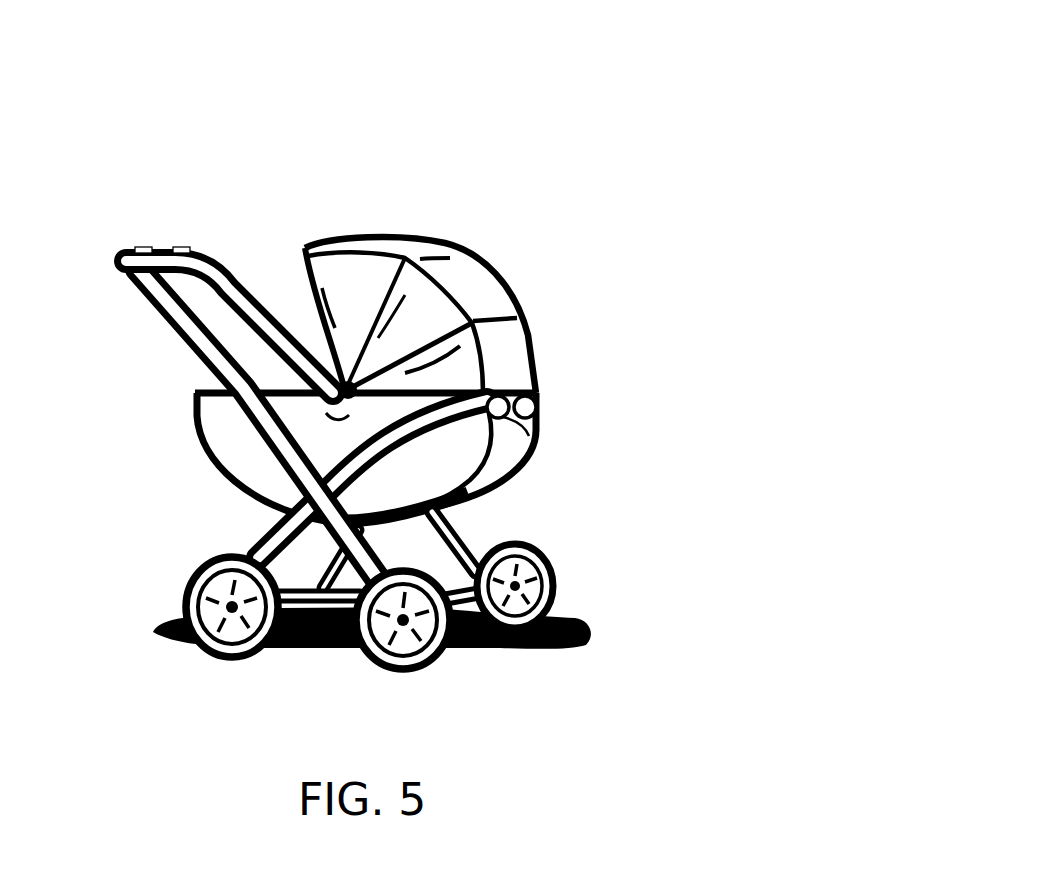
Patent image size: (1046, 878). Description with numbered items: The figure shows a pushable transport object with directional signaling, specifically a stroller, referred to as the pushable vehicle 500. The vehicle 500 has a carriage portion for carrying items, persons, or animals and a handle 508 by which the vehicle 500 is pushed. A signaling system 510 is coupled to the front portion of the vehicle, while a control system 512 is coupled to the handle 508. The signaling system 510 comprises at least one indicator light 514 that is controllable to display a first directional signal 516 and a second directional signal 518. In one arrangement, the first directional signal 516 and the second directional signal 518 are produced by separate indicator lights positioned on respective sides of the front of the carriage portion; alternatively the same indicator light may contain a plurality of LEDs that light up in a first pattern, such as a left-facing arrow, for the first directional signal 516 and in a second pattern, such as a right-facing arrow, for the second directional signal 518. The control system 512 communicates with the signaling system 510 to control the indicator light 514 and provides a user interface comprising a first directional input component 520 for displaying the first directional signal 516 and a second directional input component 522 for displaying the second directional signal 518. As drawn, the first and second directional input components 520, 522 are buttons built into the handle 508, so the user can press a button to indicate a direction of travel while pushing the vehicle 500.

The pushable vehicle 500 is at (375, 342).
The handle 508 is at (121, 270).
The signaling system 510 is at (565, 390).
The control system 512 is at (205, 383).
The indicator light 514 is at (537, 402).
The first directional signal 516 is at (537, 413).
The second directional signal 518 is at (533, 448).
The first directional input component 520 is at (181, 251).
The second directional input component 522 is at (143, 250).